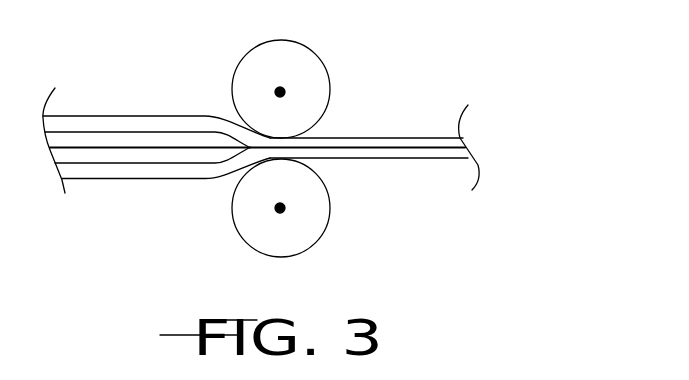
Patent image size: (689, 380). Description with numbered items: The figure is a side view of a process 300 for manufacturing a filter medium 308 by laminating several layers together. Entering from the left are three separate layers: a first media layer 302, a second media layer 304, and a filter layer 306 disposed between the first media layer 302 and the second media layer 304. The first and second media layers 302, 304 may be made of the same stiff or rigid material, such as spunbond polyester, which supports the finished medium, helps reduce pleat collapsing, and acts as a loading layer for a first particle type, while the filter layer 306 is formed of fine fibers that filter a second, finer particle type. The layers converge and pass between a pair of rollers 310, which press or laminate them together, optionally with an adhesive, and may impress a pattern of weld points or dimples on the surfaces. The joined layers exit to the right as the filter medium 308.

The process 300 is at (480, 71).
The first media layer 302 is at (137, 170).
The second media layer 304 is at (137, 123).
The filter layer 306 is at (102, 148).
The filter medium 308 is at (423, 152).
The rollers 310 is at (298, 62).